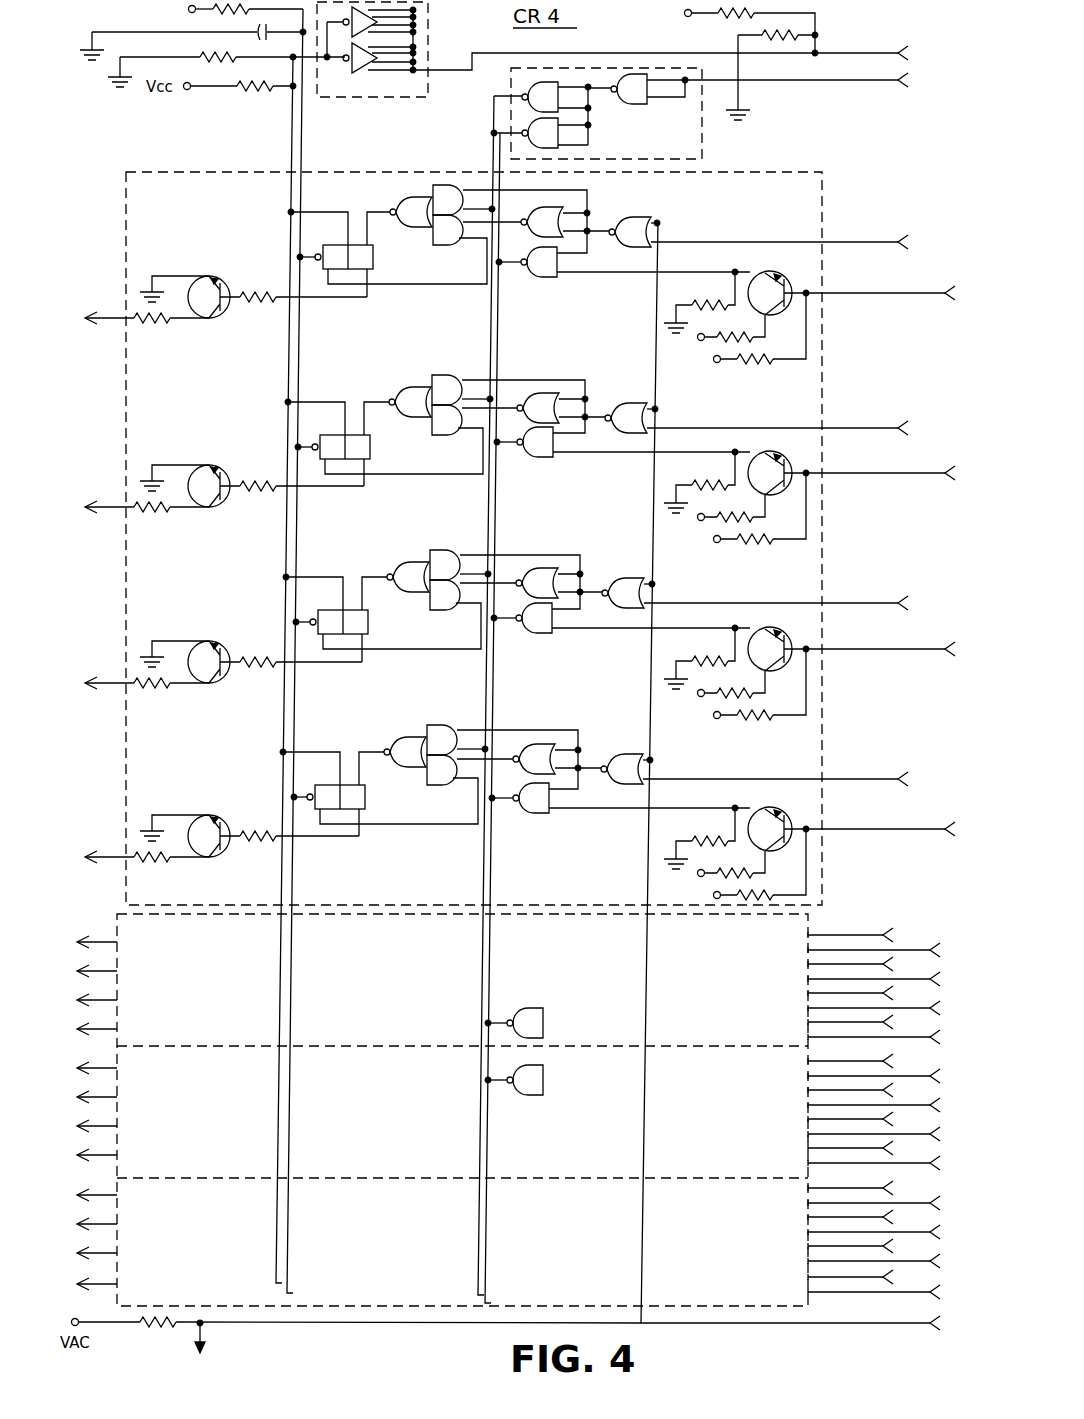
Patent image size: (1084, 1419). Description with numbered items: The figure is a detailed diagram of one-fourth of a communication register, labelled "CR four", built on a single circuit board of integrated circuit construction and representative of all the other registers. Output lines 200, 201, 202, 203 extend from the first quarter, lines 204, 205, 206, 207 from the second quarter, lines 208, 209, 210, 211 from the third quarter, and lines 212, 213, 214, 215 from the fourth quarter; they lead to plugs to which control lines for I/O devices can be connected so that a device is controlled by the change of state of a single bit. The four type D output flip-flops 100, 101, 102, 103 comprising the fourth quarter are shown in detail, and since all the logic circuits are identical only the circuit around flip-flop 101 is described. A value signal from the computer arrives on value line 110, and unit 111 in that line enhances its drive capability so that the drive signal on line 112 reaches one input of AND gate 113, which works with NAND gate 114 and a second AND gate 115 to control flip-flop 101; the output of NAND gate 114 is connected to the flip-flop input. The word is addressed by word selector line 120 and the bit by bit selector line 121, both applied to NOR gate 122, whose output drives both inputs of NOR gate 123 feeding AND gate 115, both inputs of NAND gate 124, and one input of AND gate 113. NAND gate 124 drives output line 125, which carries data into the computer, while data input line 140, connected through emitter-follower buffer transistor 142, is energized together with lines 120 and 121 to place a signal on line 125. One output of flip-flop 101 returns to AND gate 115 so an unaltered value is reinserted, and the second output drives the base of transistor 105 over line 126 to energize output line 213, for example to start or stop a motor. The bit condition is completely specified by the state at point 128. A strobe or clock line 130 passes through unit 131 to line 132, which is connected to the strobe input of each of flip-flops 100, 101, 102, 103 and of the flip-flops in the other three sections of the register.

The output flip-flop 100 is at (365, 795).
The flip-flop 101 is at (368, 627).
The output flip-flop 102 is at (370, 447).
The output flip-flop 103 is at (373, 258).
The transistor 105 is at (222, 678).
The value line 110 is at (806, 83).
The unit 111 is at (702, 135).
The drive signal line 112 is at (493, 145).
The AND gate 113 is at (447, 547).
The NAND gate 114 is at (408, 567).
The second AND gate 115 is at (447, 603).
The word selector line 120 is at (802, 1323).
The bit input selector line 121 is at (827, 603).
The NOR gate 122 is at (653, 583).
The NOR gate 123 is at (543, 567).
The NAND gate 124 is at (537, 627).
The output line 125 is at (207, 1338).
The line 126 is at (328, 665).
The point 128 is at (582, 590).
The strobe or clock line 130 is at (598, 53).
The unit 131 is at (428, 22).
The line 132 is at (290, 121).
The data input line 140 is at (913, 656).
The emitter-follower buffer transistor 142 is at (789, 640).
The output line 200 is at (75, 1284).
The output line 201 is at (75, 1253).
The output line 202 is at (75, 1224).
The output line 203 is at (75, 1195).
The output line 204 is at (75, 1155).
The output line 205 is at (75, 1126).
The output line 206 is at (75, 1097).
The output line 207 is at (75, 1068).
The output line 208 is at (75, 1029).
The output line 209 is at (75, 1000).
The output line 210 is at (75, 971).
The output line 211 is at (75, 942).
The output line 212 is at (124, 857).
The output line 213 is at (124, 683).
The output line 214 is at (124, 507).
The output line 215 is at (124, 318).